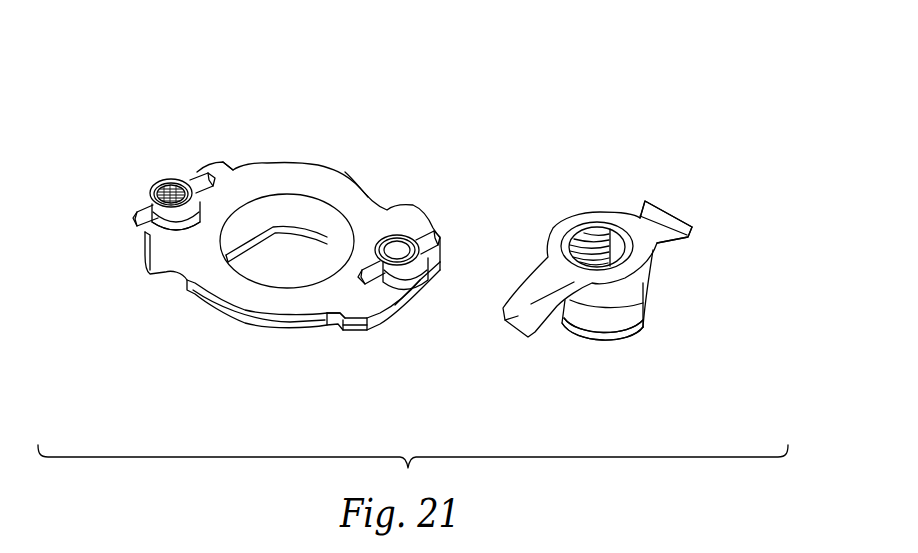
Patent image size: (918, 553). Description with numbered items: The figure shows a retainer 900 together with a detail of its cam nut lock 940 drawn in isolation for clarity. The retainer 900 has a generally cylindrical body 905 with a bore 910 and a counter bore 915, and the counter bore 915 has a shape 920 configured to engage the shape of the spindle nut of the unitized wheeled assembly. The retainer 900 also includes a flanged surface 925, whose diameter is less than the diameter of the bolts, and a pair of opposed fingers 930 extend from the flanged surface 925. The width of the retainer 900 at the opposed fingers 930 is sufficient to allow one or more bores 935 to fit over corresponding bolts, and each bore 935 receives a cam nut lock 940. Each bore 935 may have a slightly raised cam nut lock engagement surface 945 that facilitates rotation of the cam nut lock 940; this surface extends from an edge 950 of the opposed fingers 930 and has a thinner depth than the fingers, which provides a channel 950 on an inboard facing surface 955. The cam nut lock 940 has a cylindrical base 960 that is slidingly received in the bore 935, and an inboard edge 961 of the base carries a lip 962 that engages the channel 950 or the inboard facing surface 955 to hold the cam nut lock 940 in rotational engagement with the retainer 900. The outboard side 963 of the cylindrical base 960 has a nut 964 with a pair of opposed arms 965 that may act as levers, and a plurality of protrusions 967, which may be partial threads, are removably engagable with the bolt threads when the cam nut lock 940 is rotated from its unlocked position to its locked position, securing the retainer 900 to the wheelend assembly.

The retainer 900 is at (152, 98).
The cylindrical body 905 is at (226, 334).
The bore 910 is at (295, 198).
The counter bore 915 is at (297, 241).
The shape 920 is at (327, 235).
The flanged surface 925 is at (370, 207).
The opposed fingers 930 is at (210, 165).
The bore 935 is at (130, 160).
The cam nut lock 940 is at (442, 232).
The cam nut lock engagement surface 945 is at (147, 233).
The edge 950 is at (386, 314).
The inboard facing surface 955 is at (437, 264).
The cylindrical base 960 is at (580, 196).
The inboard edge 961 is at (640, 330).
The lip 962 is at (580, 353).
The outboard side 963 is at (702, 248).
The nut 964 is at (592, 220).
The opposed arms 965 is at (653, 213).
The protrusions 967 is at (613, 220).